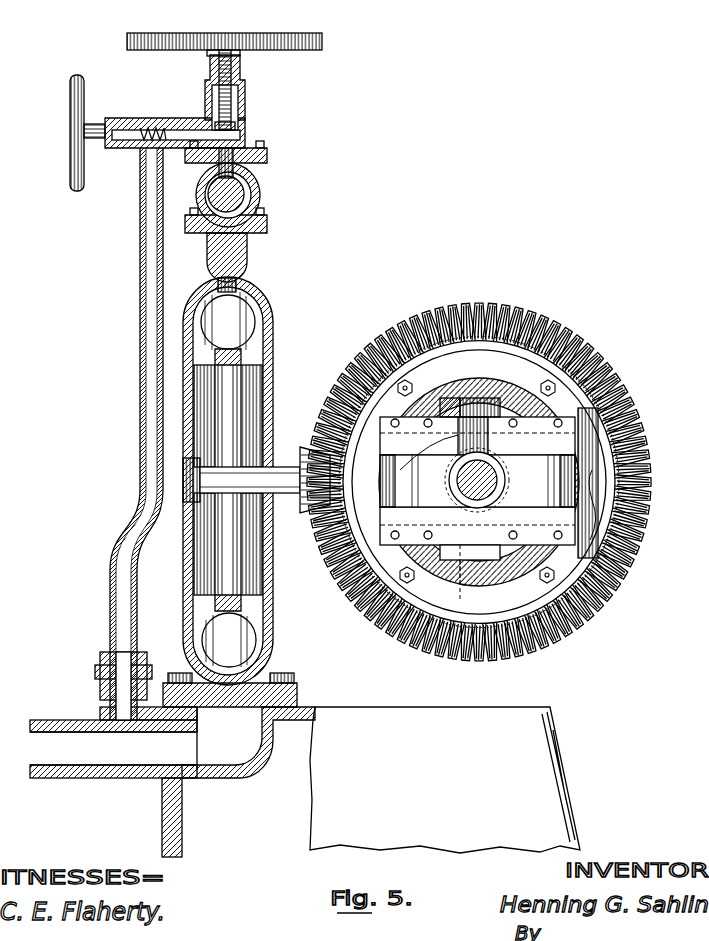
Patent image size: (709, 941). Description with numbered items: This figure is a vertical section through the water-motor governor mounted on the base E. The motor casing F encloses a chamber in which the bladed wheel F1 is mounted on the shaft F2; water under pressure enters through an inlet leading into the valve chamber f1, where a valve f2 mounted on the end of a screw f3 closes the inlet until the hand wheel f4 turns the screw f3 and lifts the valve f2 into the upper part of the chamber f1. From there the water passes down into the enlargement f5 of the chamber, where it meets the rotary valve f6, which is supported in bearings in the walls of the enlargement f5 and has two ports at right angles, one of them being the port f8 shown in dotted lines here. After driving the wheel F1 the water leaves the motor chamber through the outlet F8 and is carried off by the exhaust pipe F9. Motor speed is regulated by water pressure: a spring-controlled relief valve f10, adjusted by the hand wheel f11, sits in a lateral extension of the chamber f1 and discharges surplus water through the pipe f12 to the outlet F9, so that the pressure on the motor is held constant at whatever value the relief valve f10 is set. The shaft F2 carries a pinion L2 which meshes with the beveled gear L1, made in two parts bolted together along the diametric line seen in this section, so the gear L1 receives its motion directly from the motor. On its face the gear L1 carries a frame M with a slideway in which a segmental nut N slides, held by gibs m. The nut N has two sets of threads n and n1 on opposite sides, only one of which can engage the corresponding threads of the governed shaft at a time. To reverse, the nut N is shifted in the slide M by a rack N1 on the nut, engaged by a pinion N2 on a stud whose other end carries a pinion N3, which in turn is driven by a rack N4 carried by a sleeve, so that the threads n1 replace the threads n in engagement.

The valve chamber f1 is at (238, 96).
The valve f2 is at (246, 121).
The screw f3 is at (241, 62).
The hand wheel f4 is at (286, 36).
The enlargement of the chamber f5 is at (225, 153).
The rotary valve f6 is at (243, 196).
The port f8 is at (252, 178).
The relief valve f10 is at (156, 126).
The hand wheel f11 is at (70, 146).
The pipe f12 is at (140, 205).
The motor casing F is at (270, 392).
The bladed wheel F1 is at (245, 330).
The shaft F2 is at (276, 520).
The outlet F8 is at (238, 782).
The exhaust pipe F9 is at (113, 742).
The base E is at (445, 780).
The beveled gear L1 is at (433, 312).
The pinion L2 is at (306, 447).
The frame M is at (604, 480).
The segmental nut N is at (600, 435).
The rack N1 is at (400, 470).
The pinion N2 is at (492, 437).
The pinion N3 is at (478, 410).
The rack N4 is at (455, 398).
The gibs m is at (477, 481).
The threads n is at (498, 479).
The threads n1 is at (448, 458).